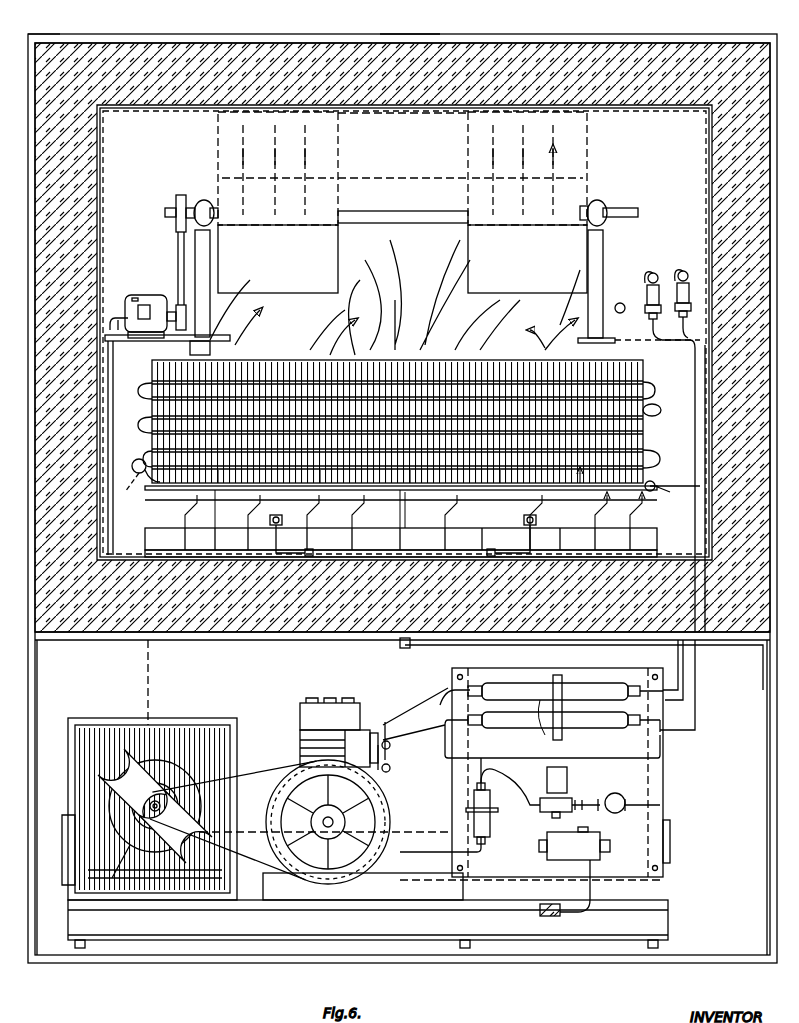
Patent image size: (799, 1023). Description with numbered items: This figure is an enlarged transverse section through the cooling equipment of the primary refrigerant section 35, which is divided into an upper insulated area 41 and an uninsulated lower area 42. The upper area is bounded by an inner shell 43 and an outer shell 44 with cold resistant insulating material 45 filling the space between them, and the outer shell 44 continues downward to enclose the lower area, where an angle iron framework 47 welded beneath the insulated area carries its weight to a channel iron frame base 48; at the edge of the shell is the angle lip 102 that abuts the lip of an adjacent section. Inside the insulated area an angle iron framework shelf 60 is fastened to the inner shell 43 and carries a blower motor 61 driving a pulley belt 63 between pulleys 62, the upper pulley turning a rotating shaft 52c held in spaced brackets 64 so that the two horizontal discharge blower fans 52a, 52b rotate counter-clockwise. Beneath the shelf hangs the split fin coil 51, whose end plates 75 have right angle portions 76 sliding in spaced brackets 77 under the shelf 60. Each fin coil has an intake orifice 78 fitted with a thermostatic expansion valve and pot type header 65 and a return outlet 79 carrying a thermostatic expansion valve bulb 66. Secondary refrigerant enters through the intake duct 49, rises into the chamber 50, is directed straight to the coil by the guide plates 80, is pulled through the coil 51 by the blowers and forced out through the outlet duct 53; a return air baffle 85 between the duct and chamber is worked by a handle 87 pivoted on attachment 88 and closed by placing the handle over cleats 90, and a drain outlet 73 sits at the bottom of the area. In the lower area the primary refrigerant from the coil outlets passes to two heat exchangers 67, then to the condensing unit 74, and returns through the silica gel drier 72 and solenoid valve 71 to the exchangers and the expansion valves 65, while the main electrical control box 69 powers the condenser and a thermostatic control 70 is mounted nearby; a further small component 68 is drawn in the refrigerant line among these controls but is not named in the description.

The angle lip 102 is at (76, 34).
The primary refrigerant section 35 is at (432, 33).
The outer shell 44 is at (738, 38).
The cold resistant insulating material 45 is at (712, 146).
The inner shell 43 is at (666, 120).
The angle iron framework 47 is at (38, 654).
The channel iron frame base 48 is at (38, 942).
The outlet duct 53 is at (224, 126).
The blower fan 52a is at (278, 259).
The blower fan 52b is at (527, 259).
The rotating shaft 52c is at (410, 215).
The spaced brackets 64 is at (205, 242).
The pulleys 62 is at (175, 204).
The pulley belt 63 is at (178, 246).
The blower motor 61 is at (134, 296).
The angle iron framework shelf 60 is at (220, 346).
The right angle portions 76 is at (407, 332).
The thermostatic expansion valve bulb 66 is at (604, 344).
The thermostatic expansion valve and pot type header 65 is at (688, 270).
The spaced brackets 77 is at (125, 305).
The upper insulated area 41 is at (408, 303).
The split fin coil 51 is at (368, 366).
The end plates 75 is at (150, 406).
The intake orifice 78 is at (653, 409).
The guide plate 80 is at (710, 470).
The chamber 50 is at (356, 516).
The return air baffle 85 is at (490, 520).
The handle 87 is at (409, 518).
The intake duct 49 is at (520, 892).
The attachment 88 is at (413, 518).
The cleats 90 is at (314, 552).
The return outlet 79 is at (640, 503).
The drain outlet 73 is at (410, 655).
The condensing unit 74 is at (276, 849).
The uninsulated lower area 42 is at (393, 695).
The heat exchangers 67 is at (532, 725).
The silica gel drier 72 is at (490, 818).
The solenoid valve 71 is at (562, 780).
The control bulb 68 is at (612, 812).
The thermostatic control 70 is at (558, 852).
The main electrical control box 69 is at (670, 832).